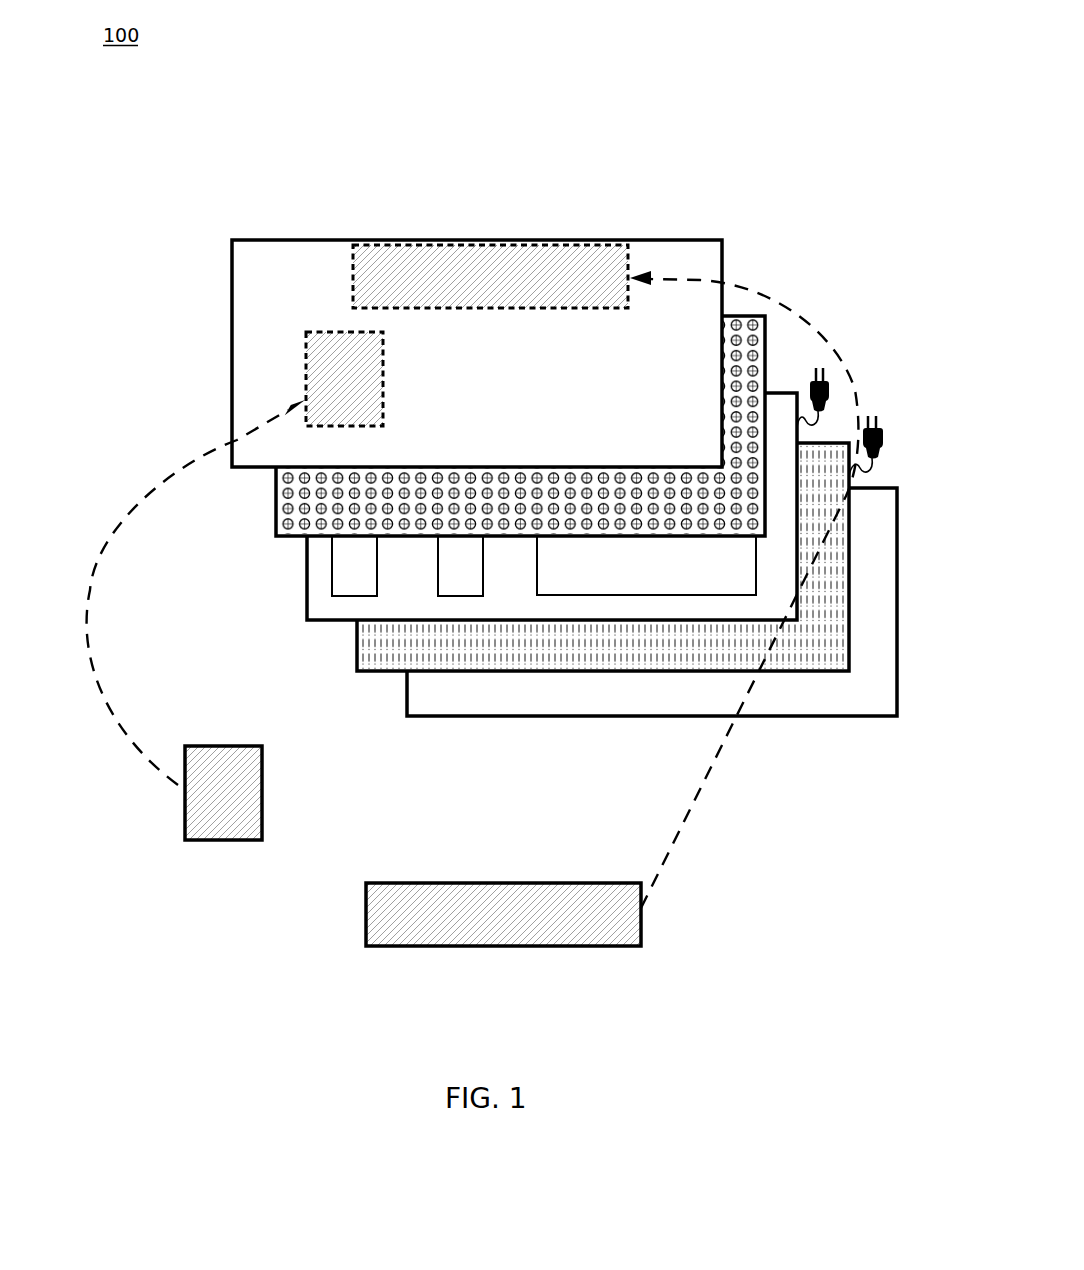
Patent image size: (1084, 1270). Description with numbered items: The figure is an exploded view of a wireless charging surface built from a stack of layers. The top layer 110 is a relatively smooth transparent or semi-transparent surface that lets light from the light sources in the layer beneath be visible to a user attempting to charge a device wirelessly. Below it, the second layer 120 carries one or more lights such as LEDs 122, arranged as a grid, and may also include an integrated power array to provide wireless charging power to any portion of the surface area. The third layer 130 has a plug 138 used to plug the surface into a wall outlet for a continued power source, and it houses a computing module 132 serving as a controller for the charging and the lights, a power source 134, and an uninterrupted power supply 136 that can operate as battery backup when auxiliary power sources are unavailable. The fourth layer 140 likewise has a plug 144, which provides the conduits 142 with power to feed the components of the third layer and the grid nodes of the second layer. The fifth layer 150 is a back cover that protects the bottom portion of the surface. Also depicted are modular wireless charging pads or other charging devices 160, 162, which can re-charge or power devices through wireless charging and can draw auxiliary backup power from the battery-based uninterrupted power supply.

The top layer 110 is at (240, 267).
The second layer 120 is at (276, 536).
The LEDs 122 is at (277, 487).
The third layer 130 is at (304, 621).
The computing module 132 is at (350, 574).
The power source 134 is at (462, 574).
The uninterrupted power supply 136 is at (570, 574).
The plug 138 is at (829, 392).
The fourth layer 140 is at (357, 671).
The conduits 142 is at (375, 643).
The plug 144 is at (883, 441).
The fifth layer 150 is at (408, 717).
The charging device 160 is at (188, 834).
The charging device 162 is at (370, 930).